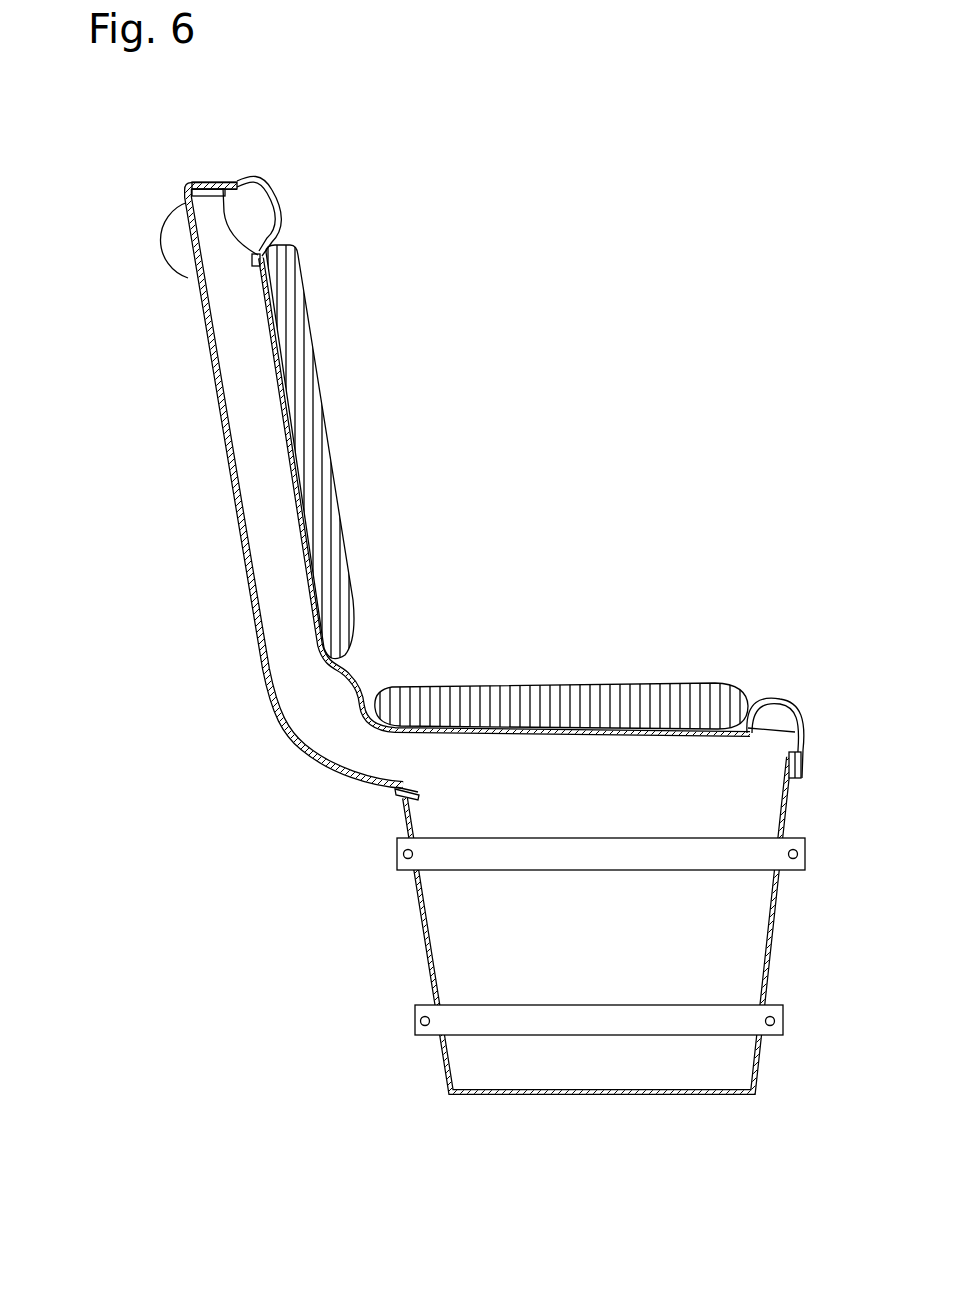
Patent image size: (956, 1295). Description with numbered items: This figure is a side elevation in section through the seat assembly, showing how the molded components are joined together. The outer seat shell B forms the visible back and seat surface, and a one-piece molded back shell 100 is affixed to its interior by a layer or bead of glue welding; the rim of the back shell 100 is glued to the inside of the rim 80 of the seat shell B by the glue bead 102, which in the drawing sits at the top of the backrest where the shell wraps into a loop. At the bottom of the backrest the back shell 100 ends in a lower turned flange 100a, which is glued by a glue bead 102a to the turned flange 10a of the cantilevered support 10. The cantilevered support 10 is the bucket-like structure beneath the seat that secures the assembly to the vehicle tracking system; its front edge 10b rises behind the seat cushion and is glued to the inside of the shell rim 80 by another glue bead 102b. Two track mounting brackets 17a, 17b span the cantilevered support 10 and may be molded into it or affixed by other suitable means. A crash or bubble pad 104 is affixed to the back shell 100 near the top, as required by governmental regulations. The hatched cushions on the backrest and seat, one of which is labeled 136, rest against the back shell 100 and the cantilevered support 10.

The cantilevered support 10 is at (535, 957).
The turned flange of cantilevered support 10a is at (403, 797).
The front edge of cantilevered support 10b is at (787, 760).
The track mounting bracket 17a is at (420, 1036).
The track mounting bracket 17b is at (403, 868).
The rim of seat shell 80 is at (197, 182).
The back shell 100 is at (250, 582).
The lower turned flange of back shell 100a is at (418, 790).
The glue bead 102 is at (193, 188).
The glue bead 102a is at (419, 798).
The glue bead 102b is at (795, 780).
The crash or bubble pad 104 is at (162, 248).
The backrest cushion 136 is at (257, 465).
The seat shell B is at (366, 667).